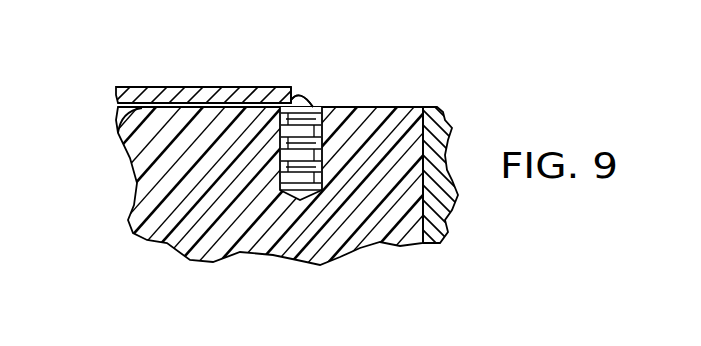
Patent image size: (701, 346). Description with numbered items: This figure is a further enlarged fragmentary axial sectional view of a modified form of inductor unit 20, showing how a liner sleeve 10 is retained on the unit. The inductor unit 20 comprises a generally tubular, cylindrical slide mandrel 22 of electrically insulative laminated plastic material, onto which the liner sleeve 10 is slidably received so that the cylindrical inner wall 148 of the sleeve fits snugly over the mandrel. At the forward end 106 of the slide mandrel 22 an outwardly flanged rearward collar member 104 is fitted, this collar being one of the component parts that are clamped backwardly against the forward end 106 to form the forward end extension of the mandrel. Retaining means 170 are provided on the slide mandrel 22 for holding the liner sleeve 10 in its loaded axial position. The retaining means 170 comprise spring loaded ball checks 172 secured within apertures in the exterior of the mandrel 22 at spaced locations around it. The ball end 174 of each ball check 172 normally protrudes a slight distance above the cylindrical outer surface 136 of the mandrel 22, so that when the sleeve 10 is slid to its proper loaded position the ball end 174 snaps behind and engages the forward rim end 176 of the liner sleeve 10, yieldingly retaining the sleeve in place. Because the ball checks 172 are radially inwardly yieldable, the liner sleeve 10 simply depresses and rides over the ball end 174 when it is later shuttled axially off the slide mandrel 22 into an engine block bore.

The liner sleeve 10 is at (179, 93).
The inductor unit 20 is at (392, 107).
The slide mandrel 22 is at (362, 106).
The rearward collar member 104 is at (453, 135).
The forward end of the mandrel 106 is at (455, 208).
The cylindrical outer surface of the mandrel 136 is at (405, 107).
The cylindrical inner wall of the liner sleeve 148 is at (118, 133).
The retaining means 170 is at (326, 98).
The spring loaded ball check 172 is at (283, 160).
The ball end 174 is at (319, 100).
The forward rim end of the liner sleeve 176 is at (294, 98).